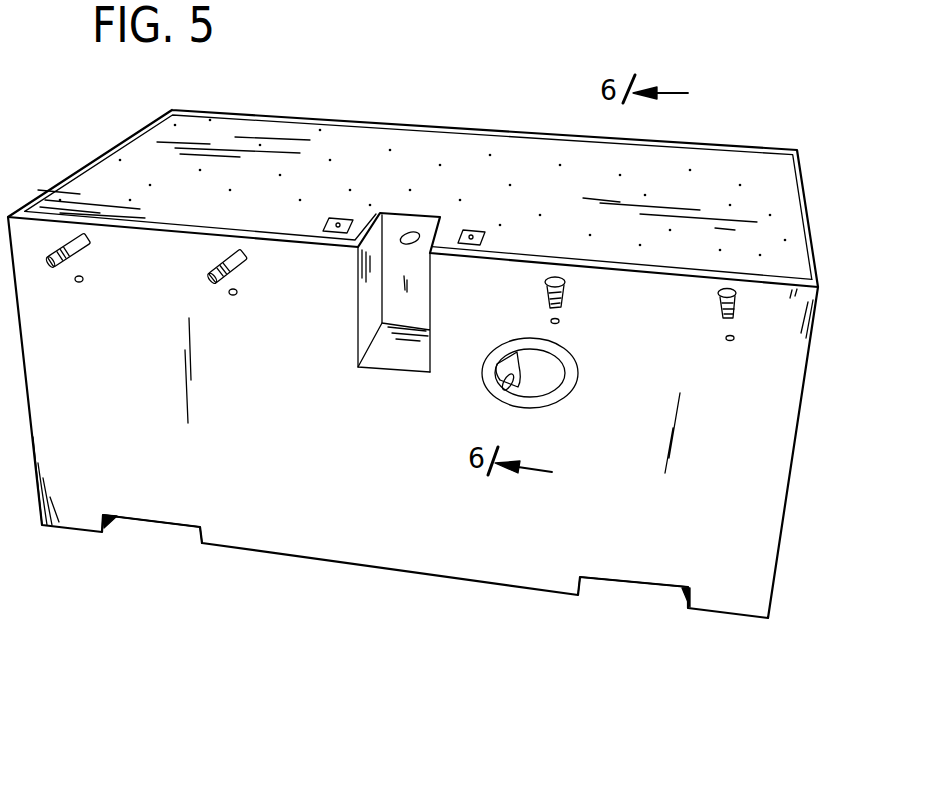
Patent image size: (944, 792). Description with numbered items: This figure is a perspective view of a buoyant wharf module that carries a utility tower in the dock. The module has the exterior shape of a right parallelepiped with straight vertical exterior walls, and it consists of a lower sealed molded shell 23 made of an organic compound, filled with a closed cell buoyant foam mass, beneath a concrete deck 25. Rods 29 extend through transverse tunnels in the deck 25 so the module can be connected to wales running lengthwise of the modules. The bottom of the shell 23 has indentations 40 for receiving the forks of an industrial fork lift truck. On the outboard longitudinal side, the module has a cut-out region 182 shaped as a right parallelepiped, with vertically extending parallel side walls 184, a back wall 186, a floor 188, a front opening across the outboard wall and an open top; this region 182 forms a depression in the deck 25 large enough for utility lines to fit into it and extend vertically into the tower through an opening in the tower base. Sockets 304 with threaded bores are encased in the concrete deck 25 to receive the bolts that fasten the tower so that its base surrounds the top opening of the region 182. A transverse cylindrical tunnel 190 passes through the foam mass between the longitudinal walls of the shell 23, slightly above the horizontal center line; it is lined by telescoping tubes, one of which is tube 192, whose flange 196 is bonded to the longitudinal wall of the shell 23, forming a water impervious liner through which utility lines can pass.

The lower sealed molded shell 23 is at (795, 484).
The concrete deck 25 is at (782, 193).
The rods 29 is at (80, 253).
The indentations 40 is at (153, 527).
The cut-out region 182 is at (420, 298).
The side walls 184 is at (367, 322).
The back wall 186 is at (420, 232).
The floor 188 is at (398, 360).
The transverse cylindrical tunnel 190 is at (550, 377).
The telescoping tube 192 is at (513, 393).
The flange 196 is at (563, 362).
The sockets 304 is at (338, 224).